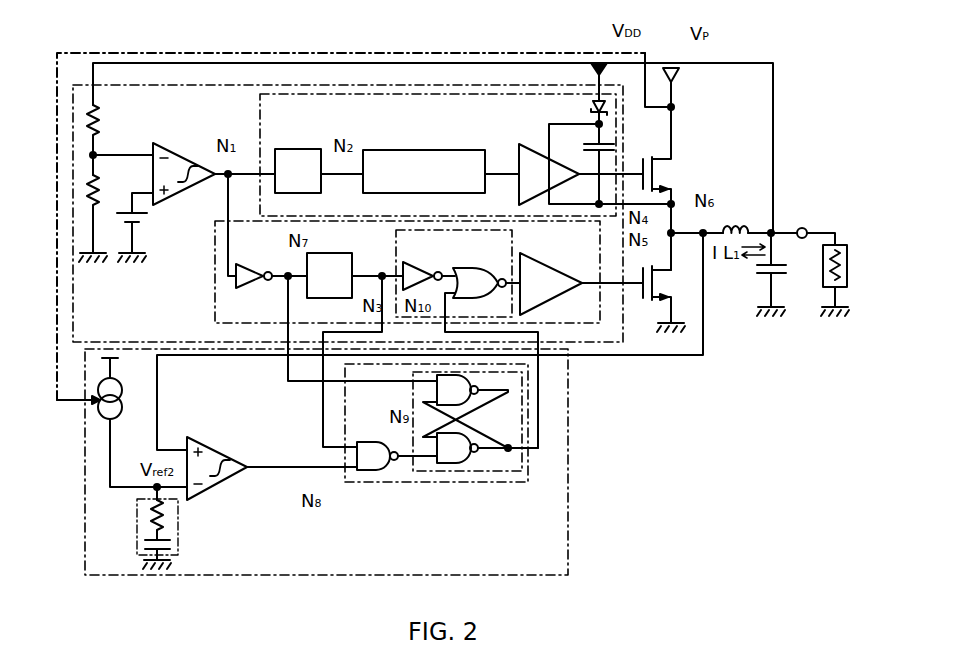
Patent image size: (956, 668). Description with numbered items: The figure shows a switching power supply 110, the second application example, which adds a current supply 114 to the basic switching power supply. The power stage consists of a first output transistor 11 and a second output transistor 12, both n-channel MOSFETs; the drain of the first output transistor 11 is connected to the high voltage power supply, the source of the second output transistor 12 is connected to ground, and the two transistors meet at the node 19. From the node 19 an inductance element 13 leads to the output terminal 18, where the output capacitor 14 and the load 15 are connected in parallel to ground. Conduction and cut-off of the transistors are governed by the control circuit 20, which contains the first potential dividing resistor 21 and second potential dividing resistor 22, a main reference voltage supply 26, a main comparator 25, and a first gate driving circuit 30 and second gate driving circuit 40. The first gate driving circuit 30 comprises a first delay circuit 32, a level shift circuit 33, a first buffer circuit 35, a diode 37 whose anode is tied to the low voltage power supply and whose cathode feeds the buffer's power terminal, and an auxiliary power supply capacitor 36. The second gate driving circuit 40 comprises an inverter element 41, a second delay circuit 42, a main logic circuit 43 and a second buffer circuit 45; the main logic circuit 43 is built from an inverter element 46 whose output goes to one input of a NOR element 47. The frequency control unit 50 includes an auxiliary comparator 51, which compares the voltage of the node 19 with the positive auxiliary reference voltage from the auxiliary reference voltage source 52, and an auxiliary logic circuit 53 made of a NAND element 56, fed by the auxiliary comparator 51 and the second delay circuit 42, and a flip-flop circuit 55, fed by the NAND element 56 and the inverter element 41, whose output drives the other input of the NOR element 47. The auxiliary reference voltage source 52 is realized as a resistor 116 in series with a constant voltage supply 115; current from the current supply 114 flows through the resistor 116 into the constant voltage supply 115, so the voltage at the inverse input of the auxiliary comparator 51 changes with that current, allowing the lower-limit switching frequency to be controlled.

The switching power supply 110 is at (130, 48).
The control circuit 20 is at (437, 85).
The first potential dividing resistor 21 is at (100, 117).
The second potential dividing resistor 22 is at (98, 205).
The main comparator 25 is at (175, 150).
The main reference voltage supply 26 is at (122, 228).
The first gate driving circuit 30 is at (255, 105).
The first delay circuit 32 is at (299, 149).
The level shift circuit 33 is at (417, 150).
The first buffer circuit 35 is at (527, 150).
The auxiliary power supply capacitor 36 is at (616, 146).
The diode 37 is at (592, 107).
The second gate driving circuit 40 is at (210, 289).
The inverter element 41 is at (248, 274).
The second delay circuit 42 is at (352, 262).
The main logic circuit 43 is at (513, 236).
The second buffer circuit 45 is at (564, 271).
The inverter element 46 is at (424, 270).
The NOR element 47 is at (467, 269).
The first output transistor 11 is at (660, 166).
The second output transistor 12 is at (653, 305).
The inductance element 13 is at (738, 225).
The output capacitor 14 is at (755, 269).
The load 15 is at (824, 268).
The output terminal 18 is at (803, 228).
The node 19 is at (677, 245).
The frequency control unit 50 is at (584, 460).
The auxiliary comparator 51 is at (219, 490).
The auxiliary reference voltage source 52 is at (178, 540).
The auxiliary logic circuit 53 is at (412, 483).
The flip-flop circuit 55 is at (471, 483).
The NAND element 56 is at (371, 471).
The current supply 114 is at (123, 393).
The constant voltage supply 115 is at (145, 542).
The resistor 116 is at (148, 518).